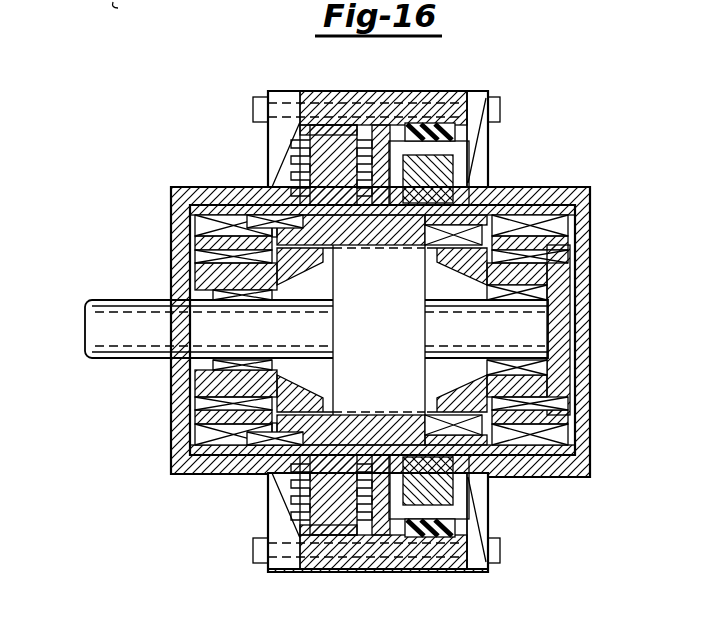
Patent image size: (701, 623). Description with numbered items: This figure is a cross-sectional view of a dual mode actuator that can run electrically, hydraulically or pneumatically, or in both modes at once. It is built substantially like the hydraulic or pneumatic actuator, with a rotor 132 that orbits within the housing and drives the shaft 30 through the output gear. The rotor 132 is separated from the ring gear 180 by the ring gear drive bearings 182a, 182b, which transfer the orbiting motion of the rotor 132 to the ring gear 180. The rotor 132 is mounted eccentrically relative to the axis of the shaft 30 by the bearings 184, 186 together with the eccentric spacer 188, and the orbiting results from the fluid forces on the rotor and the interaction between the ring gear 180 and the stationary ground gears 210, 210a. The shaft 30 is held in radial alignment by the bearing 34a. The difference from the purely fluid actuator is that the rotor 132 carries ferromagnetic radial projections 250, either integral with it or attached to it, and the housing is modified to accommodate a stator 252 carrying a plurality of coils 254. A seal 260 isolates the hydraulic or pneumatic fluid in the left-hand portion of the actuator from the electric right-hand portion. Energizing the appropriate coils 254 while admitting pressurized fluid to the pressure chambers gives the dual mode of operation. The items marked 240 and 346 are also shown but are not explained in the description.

The shaft 30 is at (97, 326).
The bearing 34a is at (195, 296).
The rotor 132 is at (558, 202).
The ring gear 180 is at (286, 231).
The ring gear drive bearing 182a is at (302, 198).
The ring gear drive bearing 182b is at (483, 208).
The bearing 184 is at (558, 214).
The bearing 186 is at (563, 250).
The eccentric spacer 188 is at (565, 231).
The ground gear 210 is at (353, 264).
The ground gear 210a is at (190, 270).
The mounting member 240 is at (140, 13).
The radial projection 250 is at (422, 165).
The stator 252 is at (473, 125).
The coil 254 is at (460, 152).
The seal 260 is at (372, 185).
The retainer ring 346 is at (583, 319).